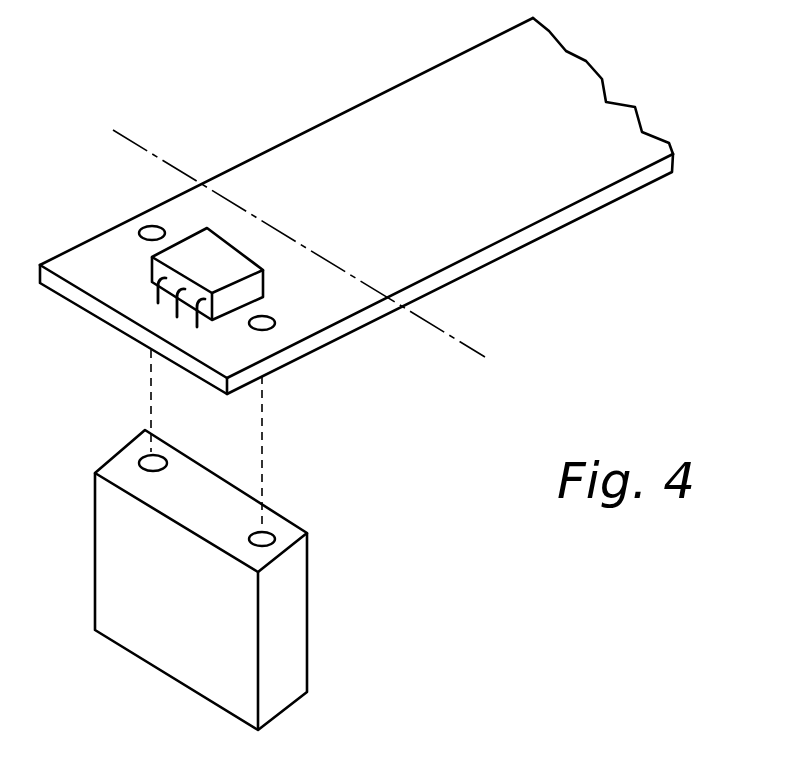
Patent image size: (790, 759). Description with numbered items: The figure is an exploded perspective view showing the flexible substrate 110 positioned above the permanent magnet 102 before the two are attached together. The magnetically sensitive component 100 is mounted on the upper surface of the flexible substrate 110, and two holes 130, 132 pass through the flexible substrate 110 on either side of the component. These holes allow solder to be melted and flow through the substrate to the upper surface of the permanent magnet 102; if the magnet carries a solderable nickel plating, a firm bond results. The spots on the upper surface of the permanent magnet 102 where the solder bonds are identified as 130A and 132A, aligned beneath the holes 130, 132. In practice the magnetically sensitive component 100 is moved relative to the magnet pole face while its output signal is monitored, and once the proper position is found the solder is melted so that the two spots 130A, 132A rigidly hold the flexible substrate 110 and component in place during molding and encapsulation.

The magnetically sensitive component 100 is at (202, 243).
The permanent magnet 102 is at (293, 633).
The flexible substrate 110 is at (495, 233).
The hole 130 is at (277, 323).
The hole 132 is at (148, 230).
The solder bonding spot 130A is at (273, 537).
The solder bonding spot 132A is at (145, 462).